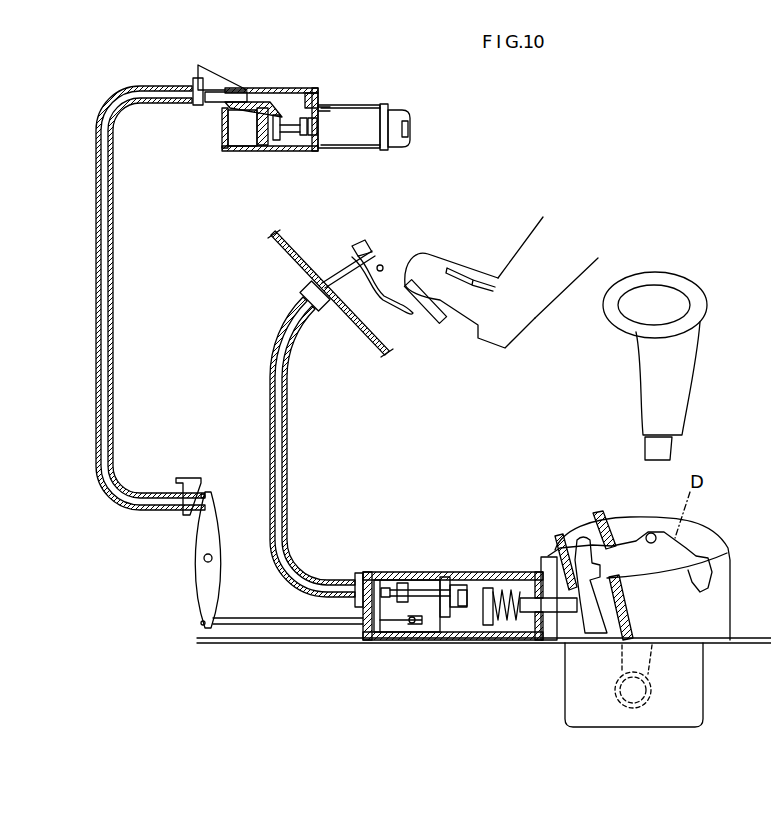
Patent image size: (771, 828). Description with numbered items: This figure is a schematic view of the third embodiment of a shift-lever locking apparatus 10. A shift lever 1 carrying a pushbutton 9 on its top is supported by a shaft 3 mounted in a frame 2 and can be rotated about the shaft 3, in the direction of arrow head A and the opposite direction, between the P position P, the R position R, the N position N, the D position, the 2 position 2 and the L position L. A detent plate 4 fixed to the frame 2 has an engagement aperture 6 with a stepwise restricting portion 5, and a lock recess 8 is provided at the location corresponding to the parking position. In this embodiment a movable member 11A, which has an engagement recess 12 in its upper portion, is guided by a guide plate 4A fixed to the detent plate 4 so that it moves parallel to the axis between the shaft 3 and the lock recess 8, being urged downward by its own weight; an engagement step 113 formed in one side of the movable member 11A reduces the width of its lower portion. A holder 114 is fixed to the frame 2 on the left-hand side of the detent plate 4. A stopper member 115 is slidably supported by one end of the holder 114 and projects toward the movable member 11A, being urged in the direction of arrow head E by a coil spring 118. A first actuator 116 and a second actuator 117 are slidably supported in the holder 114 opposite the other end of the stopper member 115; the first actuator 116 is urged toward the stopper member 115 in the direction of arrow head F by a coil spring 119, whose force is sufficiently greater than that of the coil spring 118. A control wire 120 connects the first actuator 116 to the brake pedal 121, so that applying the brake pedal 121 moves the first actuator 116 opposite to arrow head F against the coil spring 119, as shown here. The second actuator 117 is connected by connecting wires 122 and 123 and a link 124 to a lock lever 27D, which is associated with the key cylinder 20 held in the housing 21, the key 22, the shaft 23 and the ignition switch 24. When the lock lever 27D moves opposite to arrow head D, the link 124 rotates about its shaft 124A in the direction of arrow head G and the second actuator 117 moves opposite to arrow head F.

The shift lever 1 is at (677, 460).
The frame 2 is at (700, 545).
The shaft 3 is at (652, 690).
The detent plate 4 is at (733, 600).
The guide plate 4A is at (610, 520).
The restricting portion 5 is at (707, 584).
The engagement aperture 6 is at (687, 584).
The lock recess 8 is at (592, 536).
The pushbutton 9 is at (688, 308).
The shift-lever locking apparatus 10 is at (512, 507).
The movable member 11A is at (550, 558).
The engagement recess 12 is at (591, 585).
The key cylinder 20 is at (366, 110).
The housing 21 is at (336, 106).
The key 22 is at (408, 108).
The shaft 23 is at (286, 148).
The ignition switch 24 is at (237, 148).
The lock lever 27D is at (256, 92).
The engagement step 113 is at (593, 628).
The holder 114 is at (398, 573).
The stopper member 115 is at (536, 612).
The first actuator 116 is at (423, 583).
The second actuator 117 is at (434, 623).
The coil spring 118 is at (496, 618).
The coil spring 119 is at (458, 585).
The control wire 120 is at (284, 456).
The brake pedal 121 is at (415, 325).
The connecting wire 122 is at (283, 624).
The connecting wire 123 is at (112, 398).
The link 124 is at (220, 537).
The shaft 124A is at (213, 560).
The arrow head A is at (712, 288).
The arrow head D is at (278, 80).
The arrow head E is at (566, 626).
The arrow head F is at (398, 610).
The arrow head G is at (193, 642).
The L (low) position L is at (718, 560).
The N (neutral) position N is at (652, 636).
The P (parking) position P is at (588, 560).
The R (reverse) position R is at (638, 546).